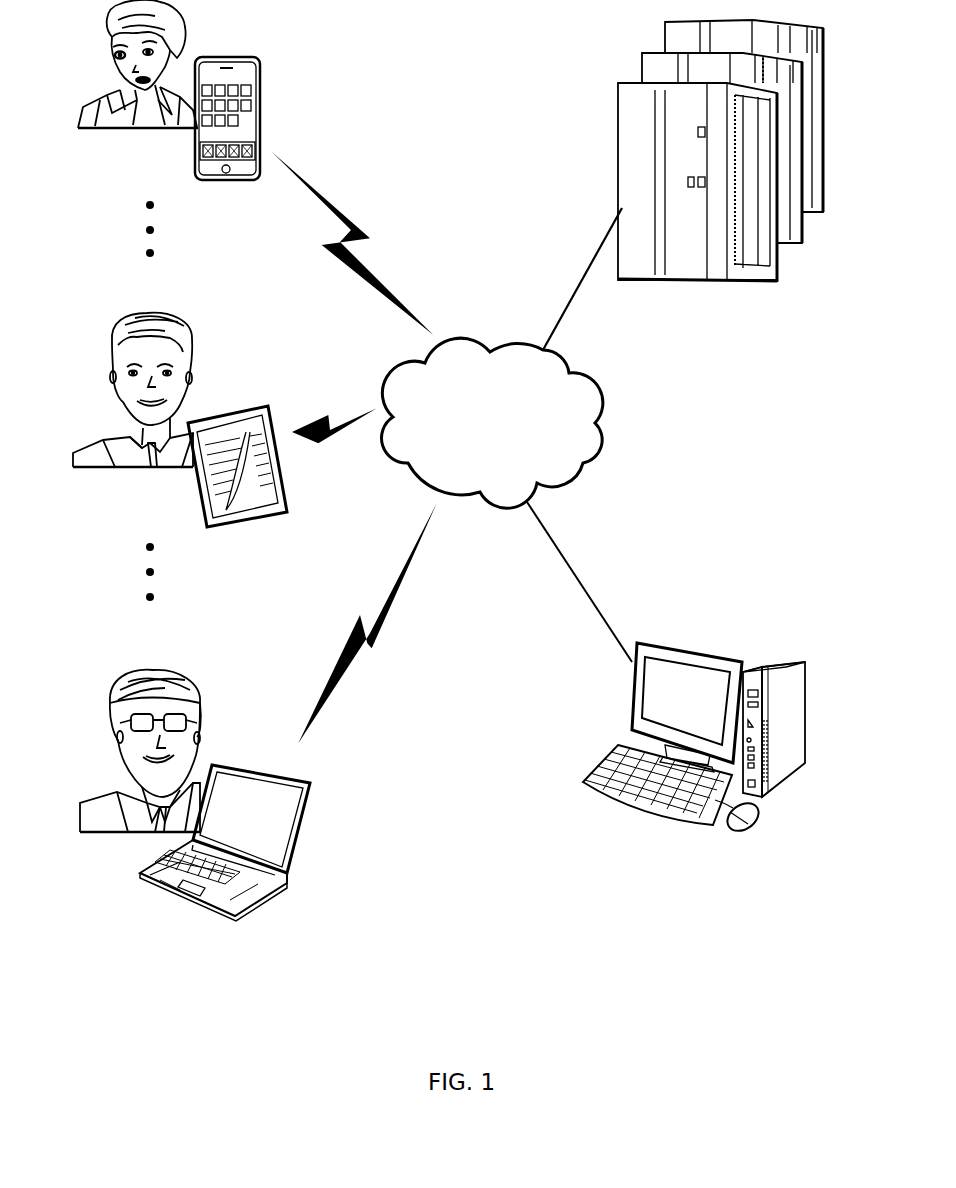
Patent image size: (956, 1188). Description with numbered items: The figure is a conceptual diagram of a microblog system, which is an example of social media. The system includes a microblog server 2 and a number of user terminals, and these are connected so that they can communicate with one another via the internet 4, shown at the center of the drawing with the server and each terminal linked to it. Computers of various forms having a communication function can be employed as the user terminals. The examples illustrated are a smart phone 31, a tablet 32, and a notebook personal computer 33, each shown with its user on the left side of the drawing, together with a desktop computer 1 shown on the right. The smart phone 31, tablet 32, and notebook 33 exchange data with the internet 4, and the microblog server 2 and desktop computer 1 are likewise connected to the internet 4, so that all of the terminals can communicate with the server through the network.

The desktop computer 1 is at (777, 663).
The microblog server 2 is at (620, 118).
The internet 4 is at (500, 431).
The smart phone 31 is at (260, 84).
The tablet 32 is at (250, 406).
The notebook (personal computer) 33 is at (305, 814).